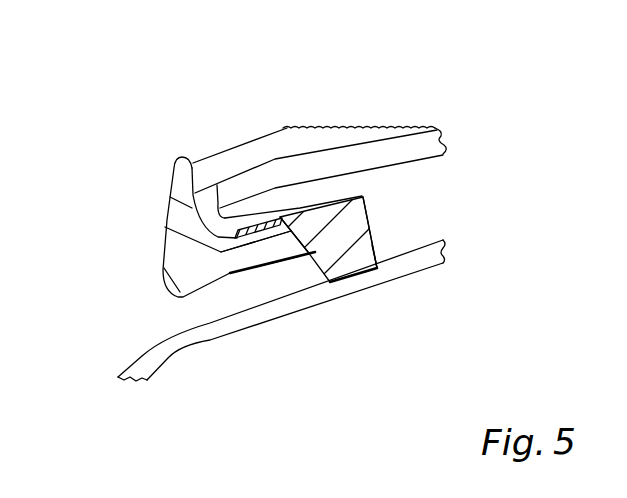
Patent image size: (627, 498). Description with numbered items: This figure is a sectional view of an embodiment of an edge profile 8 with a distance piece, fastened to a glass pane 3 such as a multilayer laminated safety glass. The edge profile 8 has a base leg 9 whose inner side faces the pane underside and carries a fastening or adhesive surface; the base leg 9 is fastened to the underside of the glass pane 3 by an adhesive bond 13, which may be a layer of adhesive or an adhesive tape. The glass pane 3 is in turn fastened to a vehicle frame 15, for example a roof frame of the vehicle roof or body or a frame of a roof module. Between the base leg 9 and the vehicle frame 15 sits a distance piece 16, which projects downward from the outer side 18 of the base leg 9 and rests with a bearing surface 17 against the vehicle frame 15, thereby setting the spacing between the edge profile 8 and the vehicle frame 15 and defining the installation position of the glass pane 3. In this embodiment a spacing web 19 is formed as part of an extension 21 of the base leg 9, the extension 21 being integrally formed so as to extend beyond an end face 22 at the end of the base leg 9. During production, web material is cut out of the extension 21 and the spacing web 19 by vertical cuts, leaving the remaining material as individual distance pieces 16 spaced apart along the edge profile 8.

The glass pane 3 is at (246, 143).
The edge profile 8 is at (162, 251).
The base leg 9 is at (253, 256).
The adhesive bond 13 is at (237, 233).
The vehicle frame 15 is at (326, 294).
The distance piece 16 is at (373, 252).
The bearing surface 17 is at (377, 269).
The outer side 18 is at (285, 261).
The spacing web 19 is at (341, 259).
The extension 21 is at (336, 228).
The end face 22 is at (302, 240).